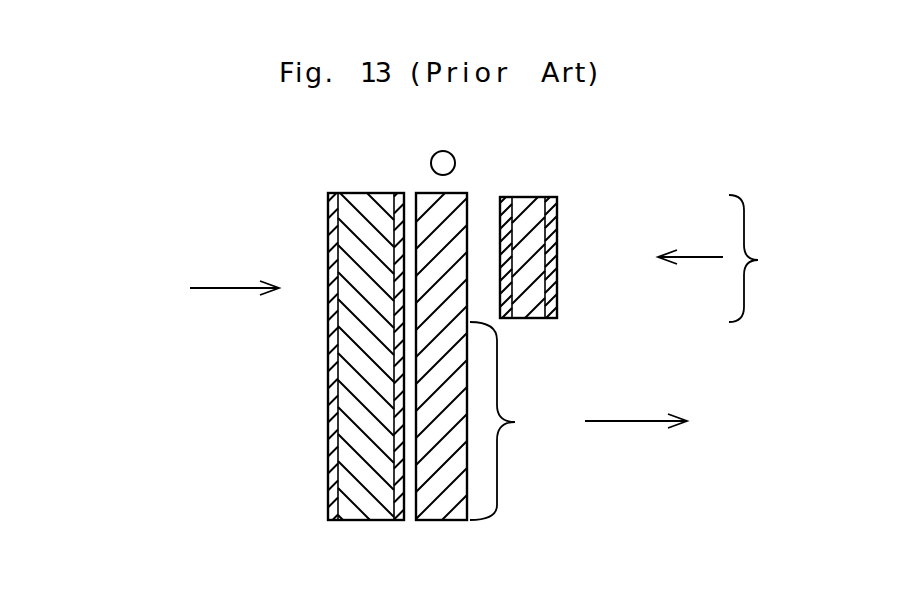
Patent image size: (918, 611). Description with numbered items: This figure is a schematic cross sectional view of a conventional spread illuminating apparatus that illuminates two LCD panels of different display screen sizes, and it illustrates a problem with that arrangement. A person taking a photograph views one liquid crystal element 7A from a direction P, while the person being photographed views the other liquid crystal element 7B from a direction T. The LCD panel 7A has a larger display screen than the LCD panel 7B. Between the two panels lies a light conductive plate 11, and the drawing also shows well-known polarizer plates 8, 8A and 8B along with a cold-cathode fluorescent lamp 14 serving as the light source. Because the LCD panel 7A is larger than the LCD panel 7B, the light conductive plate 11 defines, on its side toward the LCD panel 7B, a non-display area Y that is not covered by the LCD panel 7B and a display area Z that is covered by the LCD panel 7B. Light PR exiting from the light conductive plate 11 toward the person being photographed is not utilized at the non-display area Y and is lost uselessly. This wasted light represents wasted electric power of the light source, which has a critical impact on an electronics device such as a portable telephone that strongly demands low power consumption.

The liquid crystal element (LCD panel) 7A is at (372, 207).
The liquid crystal element (LCD panel) 7B is at (528, 210).
The polarizer plate 8 is at (400, 510).
The polarizer plate 8A is at (332, 404).
The polarizer plate 8B is at (552, 247).
The light conductive plate 11 is at (440, 507).
The cold-cathode fluorescent lamp 14 is at (435, 163).
The direction P is at (234, 268).
The direction T is at (690, 240).
The light PR is at (636, 405).
The non-display area Y is at (504, 421).
The display area Z is at (753, 258).